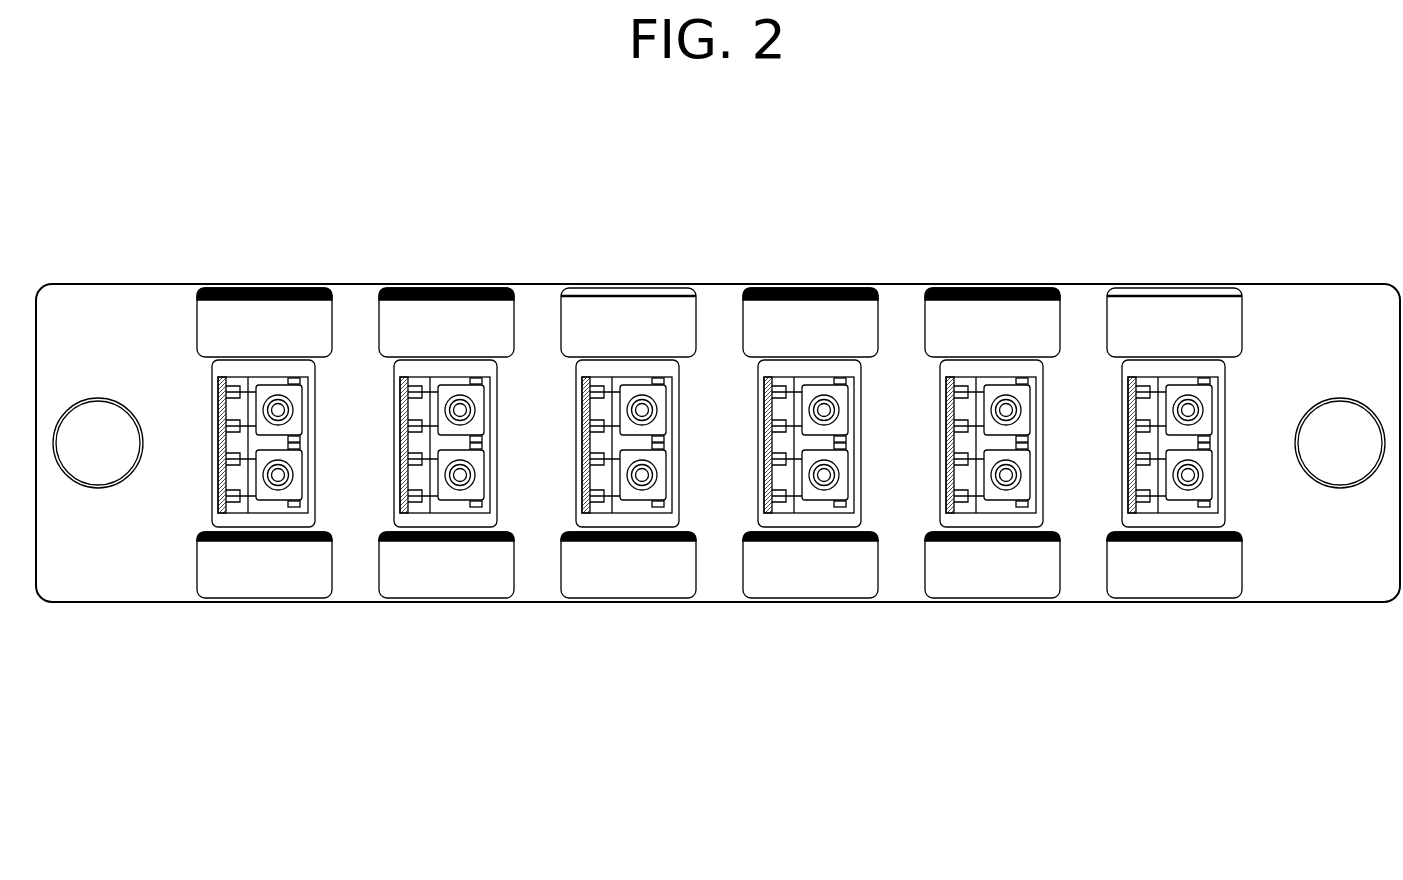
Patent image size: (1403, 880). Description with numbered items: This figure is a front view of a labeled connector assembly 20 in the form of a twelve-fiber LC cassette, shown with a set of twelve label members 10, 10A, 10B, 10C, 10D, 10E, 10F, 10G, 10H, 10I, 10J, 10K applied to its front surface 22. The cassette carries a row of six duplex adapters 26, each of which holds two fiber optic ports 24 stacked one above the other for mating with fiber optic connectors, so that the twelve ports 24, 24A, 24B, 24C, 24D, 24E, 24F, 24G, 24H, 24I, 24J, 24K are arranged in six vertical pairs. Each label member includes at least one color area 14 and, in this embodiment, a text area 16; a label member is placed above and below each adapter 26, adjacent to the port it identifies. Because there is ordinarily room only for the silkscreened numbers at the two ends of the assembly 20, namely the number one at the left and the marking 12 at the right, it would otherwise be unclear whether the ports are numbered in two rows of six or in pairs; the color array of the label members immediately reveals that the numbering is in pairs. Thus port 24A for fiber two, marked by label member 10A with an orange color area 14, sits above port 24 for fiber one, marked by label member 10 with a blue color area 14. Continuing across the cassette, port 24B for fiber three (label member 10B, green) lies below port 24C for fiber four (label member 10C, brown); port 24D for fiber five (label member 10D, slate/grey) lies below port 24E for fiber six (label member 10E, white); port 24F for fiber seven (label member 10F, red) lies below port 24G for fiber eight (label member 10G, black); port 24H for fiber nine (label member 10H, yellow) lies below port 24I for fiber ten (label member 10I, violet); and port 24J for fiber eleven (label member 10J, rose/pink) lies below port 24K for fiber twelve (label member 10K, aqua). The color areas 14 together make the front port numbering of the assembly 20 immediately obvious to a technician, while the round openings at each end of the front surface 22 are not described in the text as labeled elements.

The label member 10 is at (262, 575).
The label member 10A is at (262, 325).
The label member 10B is at (445, 575).
The label member 10C is at (444, 325).
The label member 10D is at (630, 575).
The label member 10E is at (628, 325).
The label member 10F is at (812, 575).
The label member 10G is at (810, 325).
The label member 10H is at (995, 575).
The label member 10I is at (992, 325).
The label member 10J is at (1175, 575).
The label member 10K is at (1172, 325).
The adapter plate 12 is at (718, 443).
The color area 14 is at (222, 283).
The text area 16 is at (222, 338).
The connector assembly 20 is at (442, 128).
The front surface 22 is at (98, 537).
The fiber optic port 24 is at (296, 473).
The fiber optic port 24A is at (296, 410).
The fiber optic port 24B is at (478, 473).
The fiber optic port 24C is at (478, 410).
The fiber optic port 24D is at (660, 473).
The fiber optic port 24E is at (660, 410).
The fiber optic port 24F is at (842, 473).
The fiber optic port 24G is at (842, 410).
The fiber optic port 24H is at (1024, 473).
The fiber optic port 24I is at (1024, 410).
The fiber optic port 24J is at (1206, 473).
The fiber optic port 24K is at (1206, 410).
The duplex adapter 26 is at (212, 443).